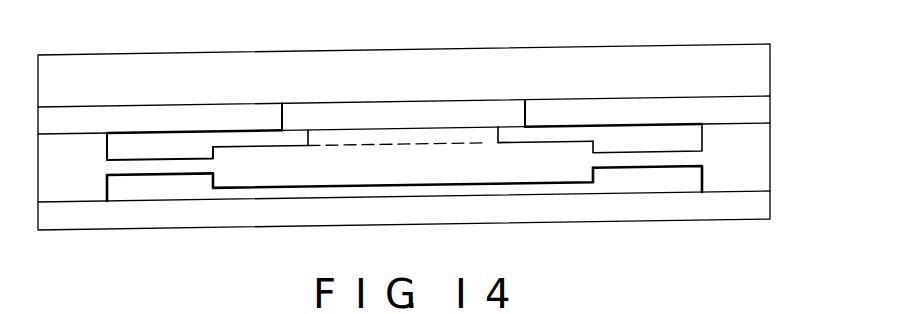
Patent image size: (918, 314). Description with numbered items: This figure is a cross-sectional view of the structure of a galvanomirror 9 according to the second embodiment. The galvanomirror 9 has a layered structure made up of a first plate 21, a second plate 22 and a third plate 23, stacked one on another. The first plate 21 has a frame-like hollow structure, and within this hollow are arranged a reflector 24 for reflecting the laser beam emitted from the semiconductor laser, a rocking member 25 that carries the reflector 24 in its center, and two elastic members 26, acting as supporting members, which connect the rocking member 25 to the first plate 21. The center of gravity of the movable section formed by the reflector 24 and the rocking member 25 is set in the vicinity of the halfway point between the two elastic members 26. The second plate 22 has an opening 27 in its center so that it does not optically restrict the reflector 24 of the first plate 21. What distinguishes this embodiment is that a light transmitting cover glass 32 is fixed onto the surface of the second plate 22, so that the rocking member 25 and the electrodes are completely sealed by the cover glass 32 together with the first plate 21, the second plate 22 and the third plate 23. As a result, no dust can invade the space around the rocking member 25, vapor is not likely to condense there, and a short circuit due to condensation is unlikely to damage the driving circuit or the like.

The galvanomirror 9 is at (131, 47).
The light transmitting cover glass 32 is at (753, 73).
The second plate 22 is at (774, 112).
The opening 27 is at (331, 117).
The first plate 21 is at (774, 166).
The reflector 24 is at (451, 132).
The rocking member 25 is at (386, 157).
The elastic members 26 is at (158, 165).
The third plate 23 is at (774, 210).